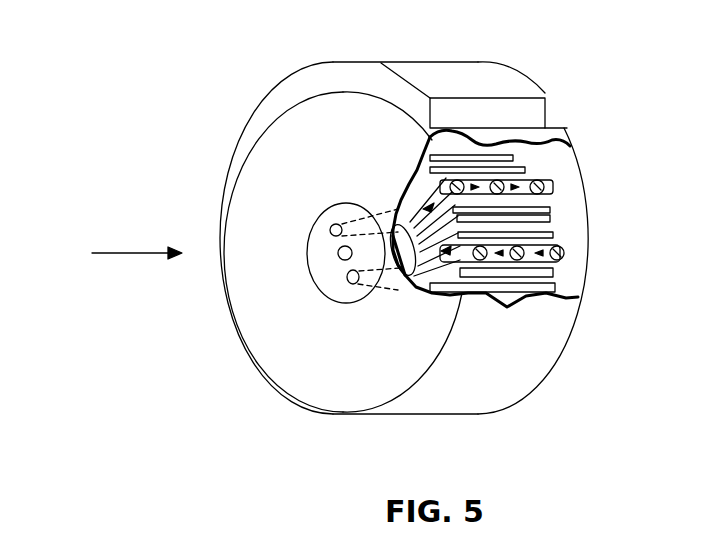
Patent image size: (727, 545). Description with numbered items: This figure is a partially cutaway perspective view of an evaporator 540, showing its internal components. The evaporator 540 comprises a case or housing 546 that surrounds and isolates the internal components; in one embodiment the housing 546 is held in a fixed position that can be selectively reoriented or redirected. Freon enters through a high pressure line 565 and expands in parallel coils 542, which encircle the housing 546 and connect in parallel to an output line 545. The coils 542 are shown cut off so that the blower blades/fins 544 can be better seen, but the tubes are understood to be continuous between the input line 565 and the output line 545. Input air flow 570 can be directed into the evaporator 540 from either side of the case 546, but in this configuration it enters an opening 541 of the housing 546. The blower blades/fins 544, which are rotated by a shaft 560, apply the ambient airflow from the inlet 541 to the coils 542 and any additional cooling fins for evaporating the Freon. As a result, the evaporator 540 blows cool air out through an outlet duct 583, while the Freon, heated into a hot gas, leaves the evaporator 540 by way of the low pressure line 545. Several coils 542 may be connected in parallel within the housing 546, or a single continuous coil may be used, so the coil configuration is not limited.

The evaporator 540 is at (222, 48).
The opening 541 is at (317, 252).
The parallel coils 542 is at (512, 176).
The blower blades/fins 544 is at (553, 273).
The output line 545 is at (351, 283).
The housing 546 is at (560, 322).
The shaft 560 is at (340, 256).
The high pressure line 565 is at (330, 230).
The input air flow 570 is at (127, 253).
The outlet duct 583 is at (533, 113).